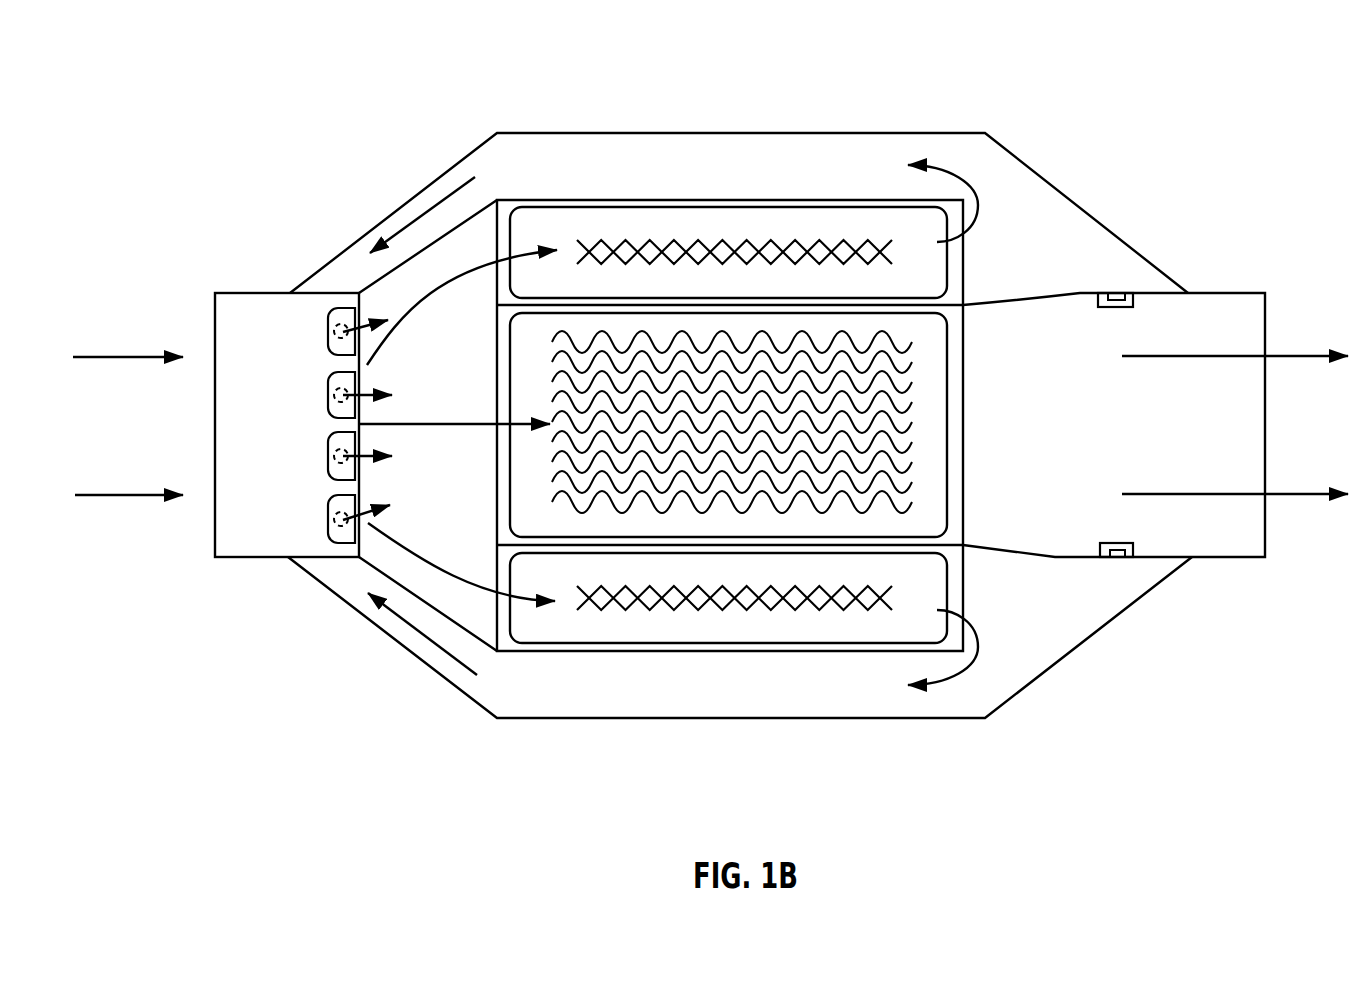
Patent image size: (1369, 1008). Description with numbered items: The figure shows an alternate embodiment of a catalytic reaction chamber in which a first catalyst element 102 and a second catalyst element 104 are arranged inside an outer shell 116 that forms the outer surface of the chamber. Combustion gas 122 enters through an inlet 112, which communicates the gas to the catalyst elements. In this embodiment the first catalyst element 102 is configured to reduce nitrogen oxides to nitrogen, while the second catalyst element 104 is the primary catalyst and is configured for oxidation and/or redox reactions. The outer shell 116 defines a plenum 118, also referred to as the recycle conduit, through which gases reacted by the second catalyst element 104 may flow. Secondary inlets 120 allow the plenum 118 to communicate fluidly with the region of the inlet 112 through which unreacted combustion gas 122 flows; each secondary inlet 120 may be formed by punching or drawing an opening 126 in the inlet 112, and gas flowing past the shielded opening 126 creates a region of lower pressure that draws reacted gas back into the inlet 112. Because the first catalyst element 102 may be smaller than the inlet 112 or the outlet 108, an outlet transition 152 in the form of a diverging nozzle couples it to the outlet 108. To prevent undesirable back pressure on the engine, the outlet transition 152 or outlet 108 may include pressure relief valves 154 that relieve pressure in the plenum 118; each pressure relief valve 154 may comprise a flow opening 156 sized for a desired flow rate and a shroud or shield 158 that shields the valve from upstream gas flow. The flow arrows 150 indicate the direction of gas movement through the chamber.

The first catalyst element 102 is at (775, 235).
The second catalyst element 104 is at (925, 365).
The reaction chamber outlet 108 is at (1247, 293).
The inlet 112 is at (217, 293).
The outer shell 116 is at (623, 133).
The plenum 118 is at (733, 162).
The secondary inlets 120 is at (328, 332).
The combustion gas 122 is at (121, 355).
The opening 126 is at (340, 322).
The flow arrows 150 is at (940, 158).
The outlet transition 152 is at (1000, 555).
The pressure relief valve 154 is at (1135, 285).
The flow opening 156 is at (1133, 289).
The shroud or shield 158 is at (1117, 300).